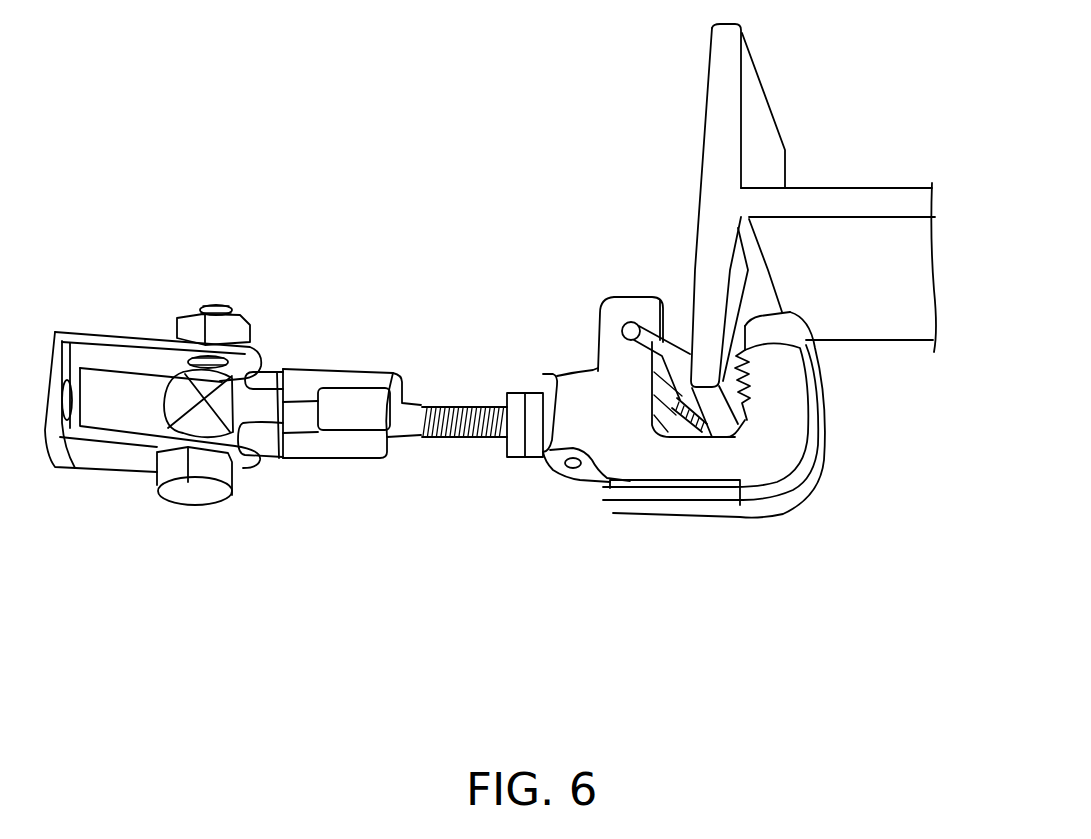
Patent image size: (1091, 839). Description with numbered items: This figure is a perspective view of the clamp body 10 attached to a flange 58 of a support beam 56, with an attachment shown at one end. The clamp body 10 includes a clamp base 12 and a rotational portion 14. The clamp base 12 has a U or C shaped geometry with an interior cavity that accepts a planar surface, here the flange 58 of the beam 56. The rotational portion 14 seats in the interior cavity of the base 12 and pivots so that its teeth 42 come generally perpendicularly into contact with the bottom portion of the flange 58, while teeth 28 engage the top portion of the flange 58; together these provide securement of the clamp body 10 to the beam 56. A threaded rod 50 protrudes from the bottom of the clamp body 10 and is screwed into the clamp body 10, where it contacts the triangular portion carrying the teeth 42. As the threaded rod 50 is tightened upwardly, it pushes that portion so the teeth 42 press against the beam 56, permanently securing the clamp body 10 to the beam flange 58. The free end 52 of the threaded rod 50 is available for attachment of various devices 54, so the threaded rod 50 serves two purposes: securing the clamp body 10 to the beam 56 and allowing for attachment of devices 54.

The clamp body 10 is at (757, 529).
The clamp base 12 is at (652, 462).
The rotational portion 14 is at (686, 348).
The teeth 28 is at (800, 343).
The teeth 42 is at (687, 347).
The threaded rod 50 is at (452, 443).
The free end 52 is at (418, 437).
The devices 54 is at (302, 447).
The support beam 56 is at (866, 200).
The flange 58 is at (716, 237).